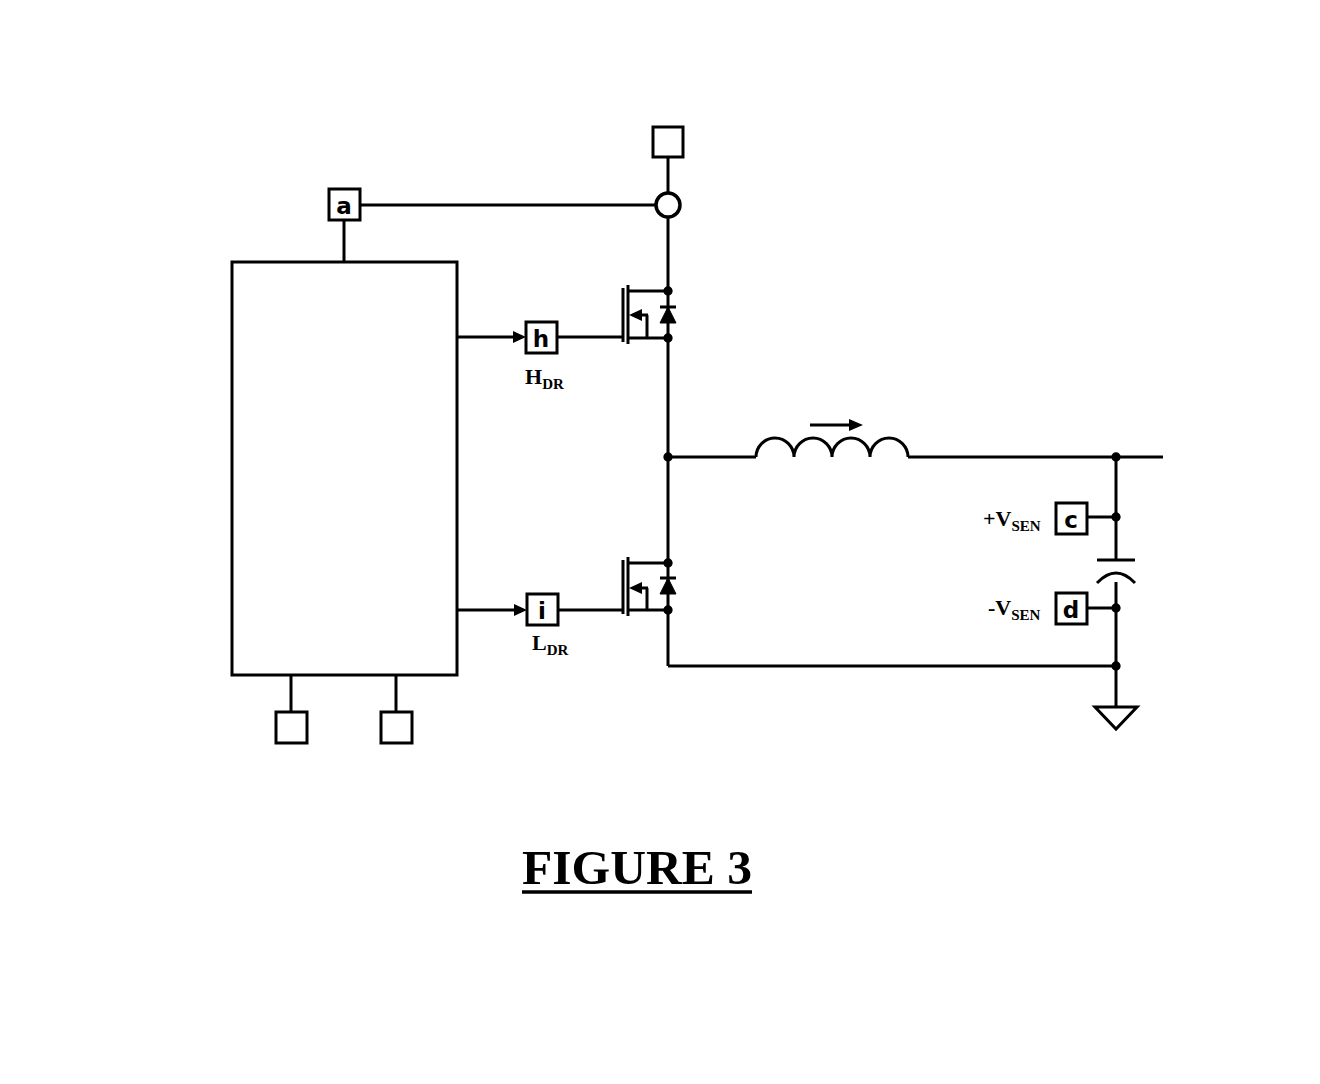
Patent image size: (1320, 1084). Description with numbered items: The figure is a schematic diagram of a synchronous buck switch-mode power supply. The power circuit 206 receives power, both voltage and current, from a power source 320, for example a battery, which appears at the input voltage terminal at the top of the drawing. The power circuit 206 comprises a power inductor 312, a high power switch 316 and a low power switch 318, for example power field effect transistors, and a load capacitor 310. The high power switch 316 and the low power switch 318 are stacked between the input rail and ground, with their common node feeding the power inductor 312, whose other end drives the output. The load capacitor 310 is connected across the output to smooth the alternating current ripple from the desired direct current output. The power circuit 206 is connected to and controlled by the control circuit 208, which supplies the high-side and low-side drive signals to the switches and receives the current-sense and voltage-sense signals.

The power circuit 206 is at (920, 277).
The control circuit 208 is at (231, 320).
The load capacitor 310 is at (1128, 558).
The power inductor 312 is at (887, 434).
The high power switch 316 is at (621, 316).
The low power switch 318 is at (621, 588).
The power source 320 is at (690, 134).